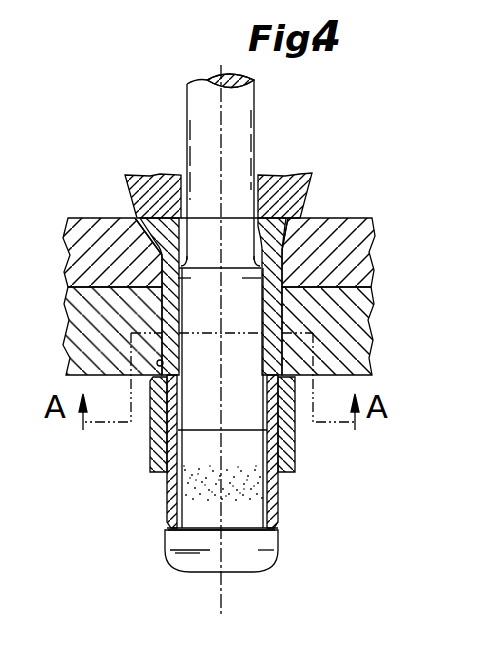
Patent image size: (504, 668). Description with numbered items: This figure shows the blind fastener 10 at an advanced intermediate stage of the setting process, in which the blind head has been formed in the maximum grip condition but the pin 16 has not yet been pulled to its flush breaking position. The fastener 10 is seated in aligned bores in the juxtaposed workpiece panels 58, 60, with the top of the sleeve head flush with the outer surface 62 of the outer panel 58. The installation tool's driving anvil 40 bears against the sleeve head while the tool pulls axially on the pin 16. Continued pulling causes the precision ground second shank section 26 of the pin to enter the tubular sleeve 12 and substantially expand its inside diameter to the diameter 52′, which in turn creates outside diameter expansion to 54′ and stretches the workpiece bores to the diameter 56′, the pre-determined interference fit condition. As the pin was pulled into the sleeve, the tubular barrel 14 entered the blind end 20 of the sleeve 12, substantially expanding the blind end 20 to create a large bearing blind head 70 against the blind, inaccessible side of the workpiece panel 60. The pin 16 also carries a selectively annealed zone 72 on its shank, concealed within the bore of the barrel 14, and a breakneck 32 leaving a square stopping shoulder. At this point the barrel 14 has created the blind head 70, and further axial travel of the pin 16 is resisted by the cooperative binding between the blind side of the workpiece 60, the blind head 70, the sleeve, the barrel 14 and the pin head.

The blind fastener 10 is at (12, 519).
The tubular sleeve 12 is at (295, 446).
The tubular barrel 14 is at (279, 507).
The pin 16 is at (242, 556).
The blind end 20 is at (161, 473).
The second shank section 26 is at (254, 380).
The breakneck 32 is at (219, 243).
The driving anvil 40 is at (158, 175).
The expanded sleeve inside diameter 52′ is at (165, 347).
The expanded sleeve outside diameter 54′ is at (162, 365).
The stretched workpiece bore 56′ is at (164, 320).
The workpiece panel 58 is at (372, 253).
The workpiece panel 60 is at (372, 335).
The outer surface 62 is at (350, 218).
The blind head 70 is at (147, 378).
The selectively annealed zone 72 is at (193, 486).